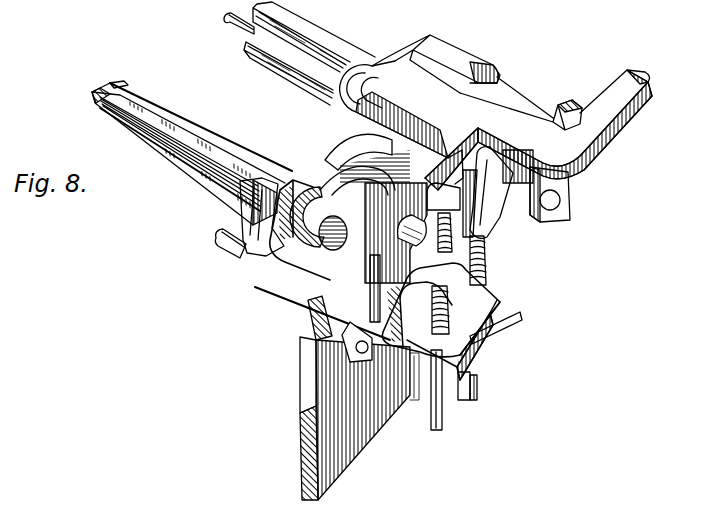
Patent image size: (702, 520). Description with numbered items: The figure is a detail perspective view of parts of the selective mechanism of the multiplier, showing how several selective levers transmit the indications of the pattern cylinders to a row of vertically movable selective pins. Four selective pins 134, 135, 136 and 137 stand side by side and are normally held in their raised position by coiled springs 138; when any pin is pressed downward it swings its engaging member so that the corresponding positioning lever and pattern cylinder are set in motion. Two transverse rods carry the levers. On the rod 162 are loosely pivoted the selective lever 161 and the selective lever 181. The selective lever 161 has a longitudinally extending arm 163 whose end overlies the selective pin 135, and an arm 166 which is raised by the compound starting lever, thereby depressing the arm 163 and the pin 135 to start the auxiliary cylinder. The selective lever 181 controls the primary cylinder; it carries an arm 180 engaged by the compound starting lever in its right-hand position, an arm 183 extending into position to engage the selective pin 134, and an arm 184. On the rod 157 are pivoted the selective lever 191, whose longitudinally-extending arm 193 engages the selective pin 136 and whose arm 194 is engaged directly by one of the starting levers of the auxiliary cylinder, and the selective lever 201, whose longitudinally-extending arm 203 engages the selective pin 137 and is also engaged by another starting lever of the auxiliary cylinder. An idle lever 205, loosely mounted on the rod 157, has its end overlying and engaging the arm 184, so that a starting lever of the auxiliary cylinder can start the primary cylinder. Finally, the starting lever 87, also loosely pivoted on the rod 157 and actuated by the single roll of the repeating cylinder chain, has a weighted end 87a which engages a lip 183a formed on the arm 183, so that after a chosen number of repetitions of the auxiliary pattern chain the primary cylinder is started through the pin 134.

The starting lever 87 is at (642, 91).
The weighted end 87a is at (322, 166).
The selective pin 134 is at (437, 431).
The selective pin 135 is at (410, 402).
The selective pin 136 is at (454, 392).
The selective pin 137 is at (470, 373).
The coiled springs 138 is at (486, 280).
The rod 157 is at (226, 18).
The selective lever 161 is at (162, 96).
The rod 162 is at (121, 77).
The longitudinally extending arm 163 is at (397, 233).
The arm 166 is at (234, 257).
The arm 180 is at (276, 281).
The selective lever 181 is at (92, 97).
The arm 183 is at (490, 299).
The lip 183a is at (494, 300).
The arm 184 is at (340, 150).
The selective lever 191 is at (291, 19).
The longitudinally-extending arm 193 is at (347, 106).
The arm 194 is at (404, 51).
The selective lever 201 is at (248, 48).
The longitudinally-extending arm 203 is at (496, 280).
The idle lever 205 is at (478, 80).